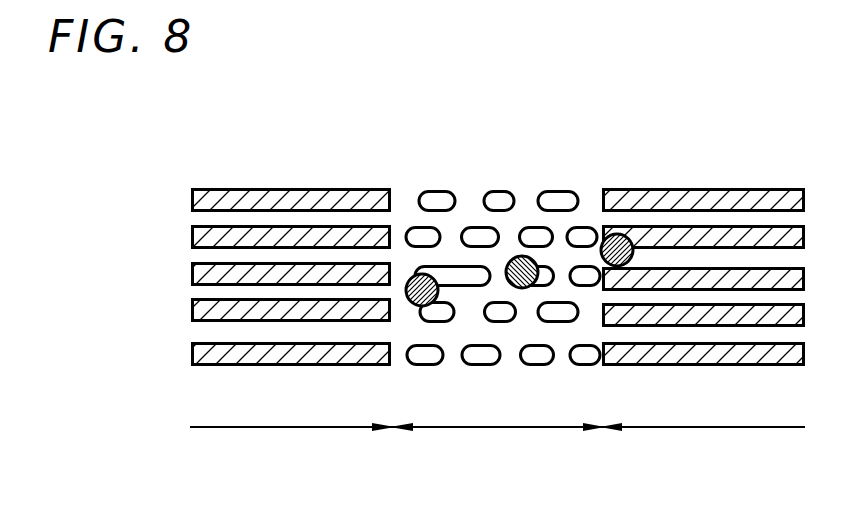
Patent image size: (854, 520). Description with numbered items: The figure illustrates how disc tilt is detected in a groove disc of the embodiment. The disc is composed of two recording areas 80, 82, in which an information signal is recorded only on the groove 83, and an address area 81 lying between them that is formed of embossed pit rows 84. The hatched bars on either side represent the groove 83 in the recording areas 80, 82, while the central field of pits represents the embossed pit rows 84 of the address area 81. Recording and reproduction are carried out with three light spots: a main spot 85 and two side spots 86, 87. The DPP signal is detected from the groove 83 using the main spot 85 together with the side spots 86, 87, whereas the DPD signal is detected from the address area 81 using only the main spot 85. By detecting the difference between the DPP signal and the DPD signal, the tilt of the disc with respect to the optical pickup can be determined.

The recording area 80 is at (246, 428).
The address area 81 is at (465, 428).
The recording area 82 is at (672, 428).
The groove 83 is at (221, 235).
The embossed pit rows 84 is at (552, 176).
The main spot 85 is at (522, 288).
The side spot 86 is at (410, 278).
The side spot 87 is at (602, 244).